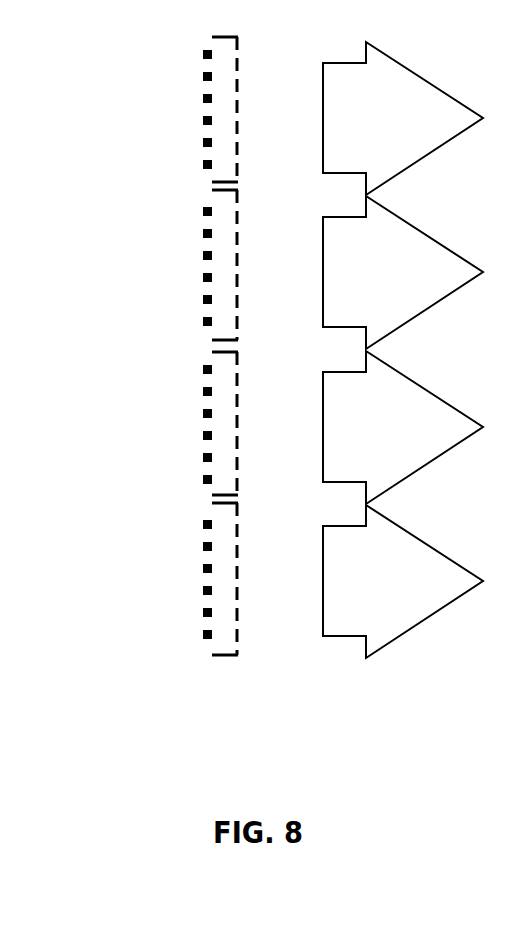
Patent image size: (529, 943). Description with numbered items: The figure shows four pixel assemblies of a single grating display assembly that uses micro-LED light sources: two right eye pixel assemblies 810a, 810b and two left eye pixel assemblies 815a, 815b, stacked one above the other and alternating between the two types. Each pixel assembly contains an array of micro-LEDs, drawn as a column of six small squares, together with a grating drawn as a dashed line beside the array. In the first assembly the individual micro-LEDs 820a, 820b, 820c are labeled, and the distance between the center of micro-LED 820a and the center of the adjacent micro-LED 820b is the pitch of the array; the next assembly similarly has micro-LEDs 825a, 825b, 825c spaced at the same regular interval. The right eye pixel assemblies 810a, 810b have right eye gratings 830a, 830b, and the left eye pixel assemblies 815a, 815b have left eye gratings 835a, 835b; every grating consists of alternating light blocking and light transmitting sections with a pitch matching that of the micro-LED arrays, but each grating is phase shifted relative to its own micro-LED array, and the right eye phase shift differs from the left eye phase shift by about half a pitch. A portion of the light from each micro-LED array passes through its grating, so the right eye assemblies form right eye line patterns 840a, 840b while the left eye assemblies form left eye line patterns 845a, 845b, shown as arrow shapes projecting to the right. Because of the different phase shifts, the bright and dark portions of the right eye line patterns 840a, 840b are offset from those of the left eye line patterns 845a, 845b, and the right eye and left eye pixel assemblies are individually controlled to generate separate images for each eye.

The right eye pixel assembly 810a is at (140, 122).
The right eye pixel assembly 810b is at (140, 440).
The left eye pixel assembly 815a is at (140, 282).
The left eye pixel assembly 815b is at (140, 598).
The micro-LED 820a is at (198, 52).
The micro-LED 820b is at (198, 74).
The micro-LED 820c is at (198, 97).
The micro-LED 825a is at (198, 209).
The micro-LED 825b is at (198, 231).
The micro-LED 825c is at (198, 254).
The right eye grating 830a is at (249, 74).
The right eye grating 830b is at (249, 380).
The left eye grating 835a is at (249, 227).
The left eye grating 835b is at (249, 537).
The right eye line pattern 840a is at (365, 157).
The right eye line pattern 840b is at (365, 466).
The left eye line pattern 845a is at (365, 311).
The left eye line pattern 845b is at (365, 620).